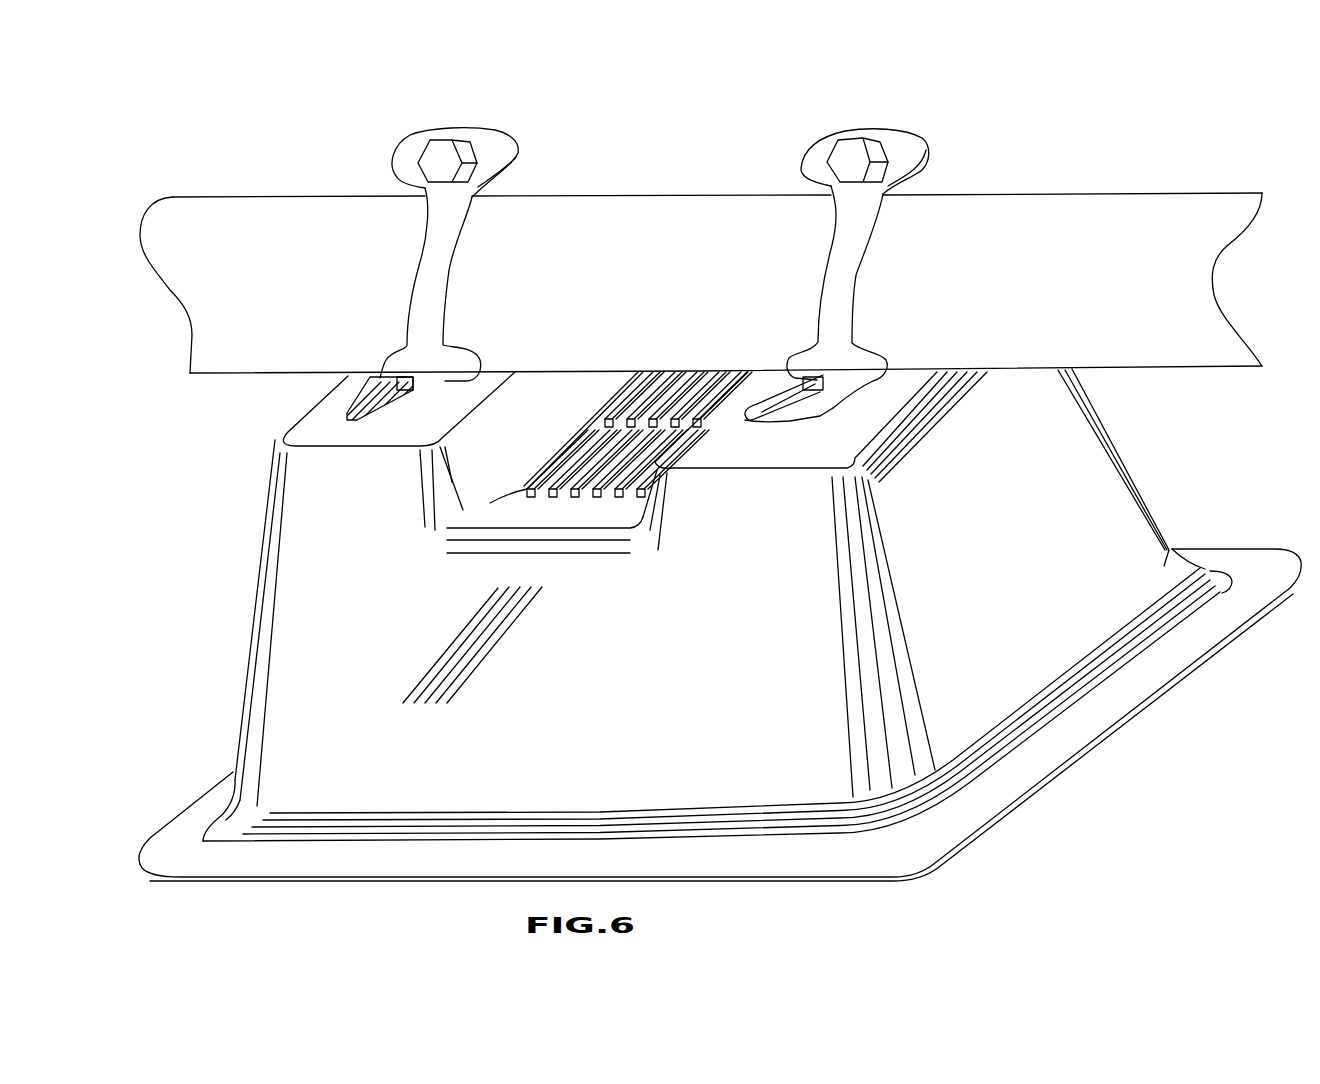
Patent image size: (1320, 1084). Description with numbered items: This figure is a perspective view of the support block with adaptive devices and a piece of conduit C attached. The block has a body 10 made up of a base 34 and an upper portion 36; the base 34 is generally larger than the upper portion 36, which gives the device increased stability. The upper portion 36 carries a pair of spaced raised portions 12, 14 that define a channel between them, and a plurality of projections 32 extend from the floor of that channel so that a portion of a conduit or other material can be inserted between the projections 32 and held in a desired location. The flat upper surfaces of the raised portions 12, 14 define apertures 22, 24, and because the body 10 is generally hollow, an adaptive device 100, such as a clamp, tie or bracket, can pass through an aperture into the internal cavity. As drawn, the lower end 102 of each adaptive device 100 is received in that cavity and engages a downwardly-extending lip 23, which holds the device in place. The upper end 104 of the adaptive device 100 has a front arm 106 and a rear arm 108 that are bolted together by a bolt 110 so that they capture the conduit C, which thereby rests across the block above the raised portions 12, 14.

The body 10 is at (302, 585).
The raised portion 12 is at (323, 413).
The raised portion 14 is at (1025, 296).
The aperture 22 is at (372, 385).
The downwardly-extending lip 23 is at (378, 407).
The aperture 24 is at (815, 398).
The projections 32 is at (683, 385).
The base 34 is at (957, 823).
The upper portion 36 is at (1012, 495).
The adaptive device 100 is at (797, 129).
The lower end 102 is at (417, 403).
The upper end 104 is at (636, 245).
The front arm 106 is at (482, 134).
The rear arm 108 is at (517, 160).
The bolt 110 is at (444, 158).
The conduit C is at (330, 280).